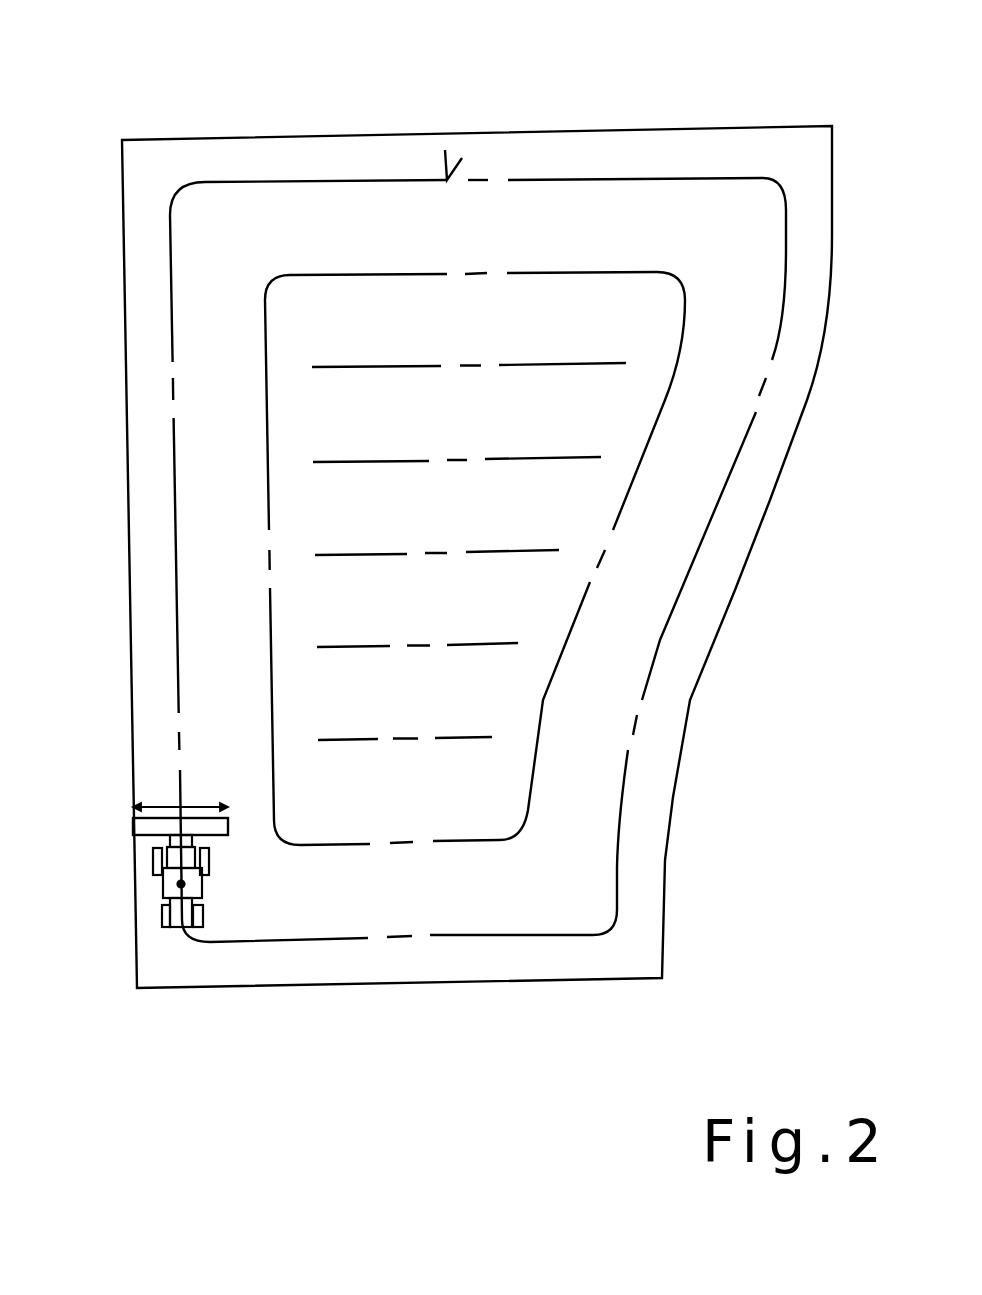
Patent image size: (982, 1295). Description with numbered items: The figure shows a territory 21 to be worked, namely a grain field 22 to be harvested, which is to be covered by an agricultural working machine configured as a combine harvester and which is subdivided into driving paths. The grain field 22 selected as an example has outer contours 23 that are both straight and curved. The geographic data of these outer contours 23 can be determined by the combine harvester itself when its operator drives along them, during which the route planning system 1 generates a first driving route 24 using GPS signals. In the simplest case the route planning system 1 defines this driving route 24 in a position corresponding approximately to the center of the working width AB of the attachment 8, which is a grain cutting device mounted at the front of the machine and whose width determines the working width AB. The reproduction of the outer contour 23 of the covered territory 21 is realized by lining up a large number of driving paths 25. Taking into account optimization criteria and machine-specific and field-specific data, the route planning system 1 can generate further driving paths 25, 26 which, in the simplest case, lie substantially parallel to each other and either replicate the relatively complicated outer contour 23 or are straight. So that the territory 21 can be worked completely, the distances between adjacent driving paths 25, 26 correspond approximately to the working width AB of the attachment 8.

The route planning system 1 is at (168, 885).
The attachment 8 is at (140, 828).
The working width AB is at (160, 805).
The territory 21 is at (716, 680).
The grain field 22 is at (613, 655).
The outer contours 23 is at (663, 128).
The first driving route 24 is at (447, 180).
The driving paths 25 is at (267, 183).
The further driving paths 26 is at (477, 737).